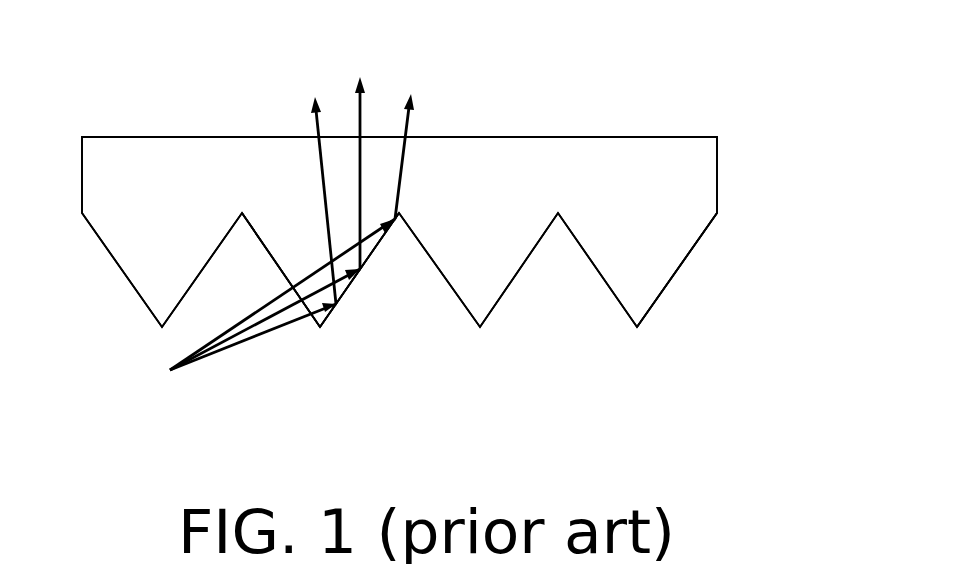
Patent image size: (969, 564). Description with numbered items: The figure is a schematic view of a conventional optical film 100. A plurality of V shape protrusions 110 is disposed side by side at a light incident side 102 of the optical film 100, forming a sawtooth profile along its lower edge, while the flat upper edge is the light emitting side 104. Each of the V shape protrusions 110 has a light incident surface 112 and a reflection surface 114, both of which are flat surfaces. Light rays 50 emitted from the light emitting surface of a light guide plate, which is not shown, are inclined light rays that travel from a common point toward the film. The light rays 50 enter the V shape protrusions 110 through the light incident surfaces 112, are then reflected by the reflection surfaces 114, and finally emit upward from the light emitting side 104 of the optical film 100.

The light rays 50 is at (313, 268).
The optical film 100 is at (656, 464).
The light incident side 102 is at (707, 270).
The light emitting side 104 is at (593, 137).
The V shape protrusions 110 is at (653, 277).
The light incident surface 112 is at (273, 260).
The reflection surface 114 is at (373, 255).